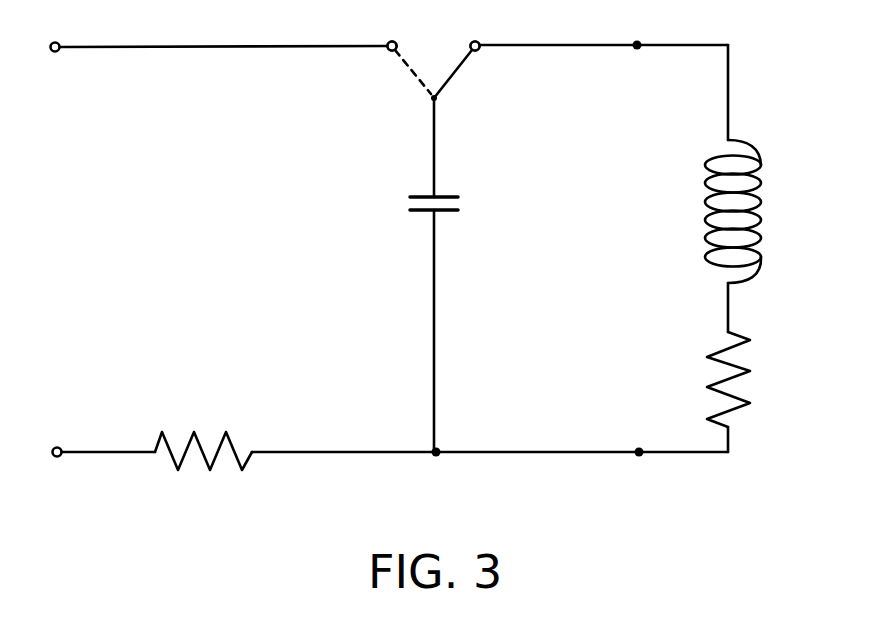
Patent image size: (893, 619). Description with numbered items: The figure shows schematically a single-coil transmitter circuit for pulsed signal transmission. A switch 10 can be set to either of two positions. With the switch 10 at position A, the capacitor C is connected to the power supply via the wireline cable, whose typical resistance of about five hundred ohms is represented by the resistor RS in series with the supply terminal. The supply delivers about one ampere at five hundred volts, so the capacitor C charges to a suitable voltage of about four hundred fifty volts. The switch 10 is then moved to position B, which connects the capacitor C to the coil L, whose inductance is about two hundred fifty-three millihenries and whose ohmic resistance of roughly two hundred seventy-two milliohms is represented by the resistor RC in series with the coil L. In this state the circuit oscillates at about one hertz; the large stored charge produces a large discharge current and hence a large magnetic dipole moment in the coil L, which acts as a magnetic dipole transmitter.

The switch 10 is at (458, 67).
The switch position A is at (391, 31).
The switch position B is at (474, 31).
The capacitor C is at (443, 187).
The coil L is at (747, 211).
The resistor R_c RC is at (750, 392).
The resistor R_s RS is at (203, 427).